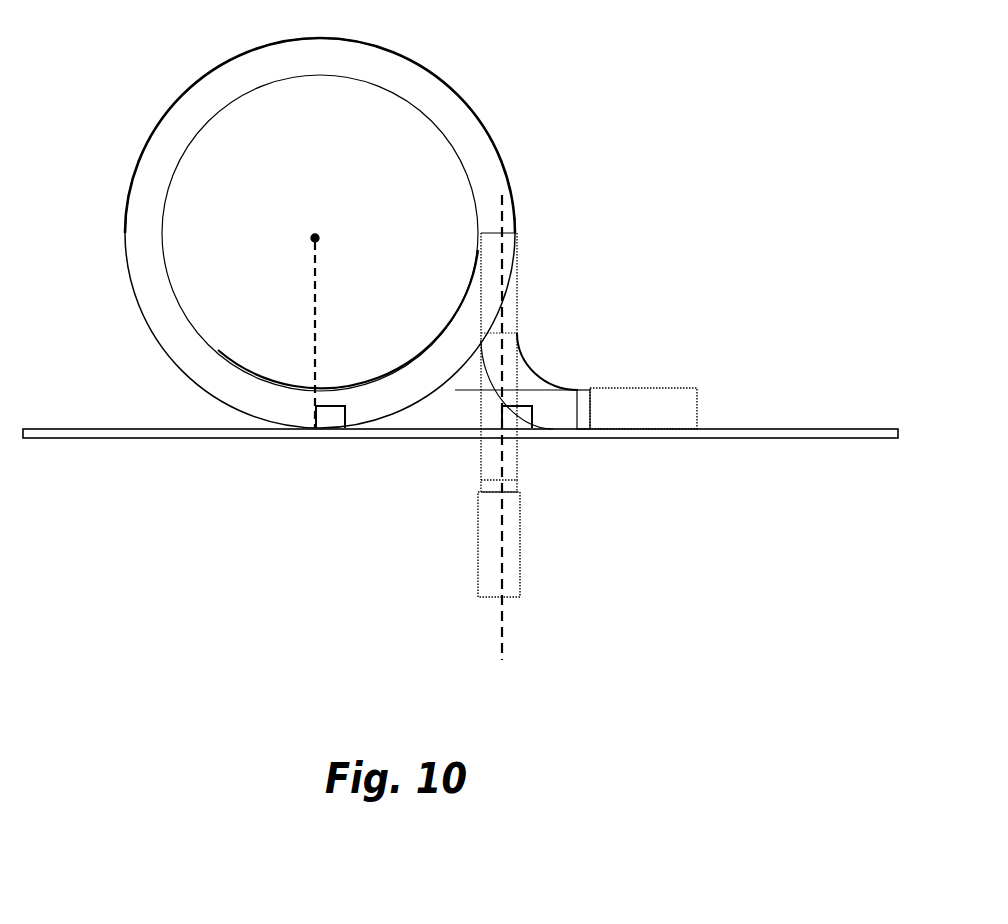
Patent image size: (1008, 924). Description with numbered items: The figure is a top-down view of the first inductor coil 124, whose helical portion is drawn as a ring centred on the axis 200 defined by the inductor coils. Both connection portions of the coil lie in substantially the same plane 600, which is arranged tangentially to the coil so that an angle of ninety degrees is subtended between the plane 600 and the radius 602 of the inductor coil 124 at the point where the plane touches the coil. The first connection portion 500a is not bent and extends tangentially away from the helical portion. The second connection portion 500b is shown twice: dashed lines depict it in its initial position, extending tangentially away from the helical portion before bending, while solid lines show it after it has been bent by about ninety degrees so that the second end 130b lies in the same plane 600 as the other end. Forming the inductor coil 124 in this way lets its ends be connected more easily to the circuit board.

The first inductor coil 124 is at (140, 243).
The axis 200 is at (313, 238).
The radius 602 is at (313, 317).
The plane 600 is at (118, 429).
The first connection portion 500a is at (458, 408).
The second connection portion 500b is at (547, 383).
The second end 130b is at (698, 403).